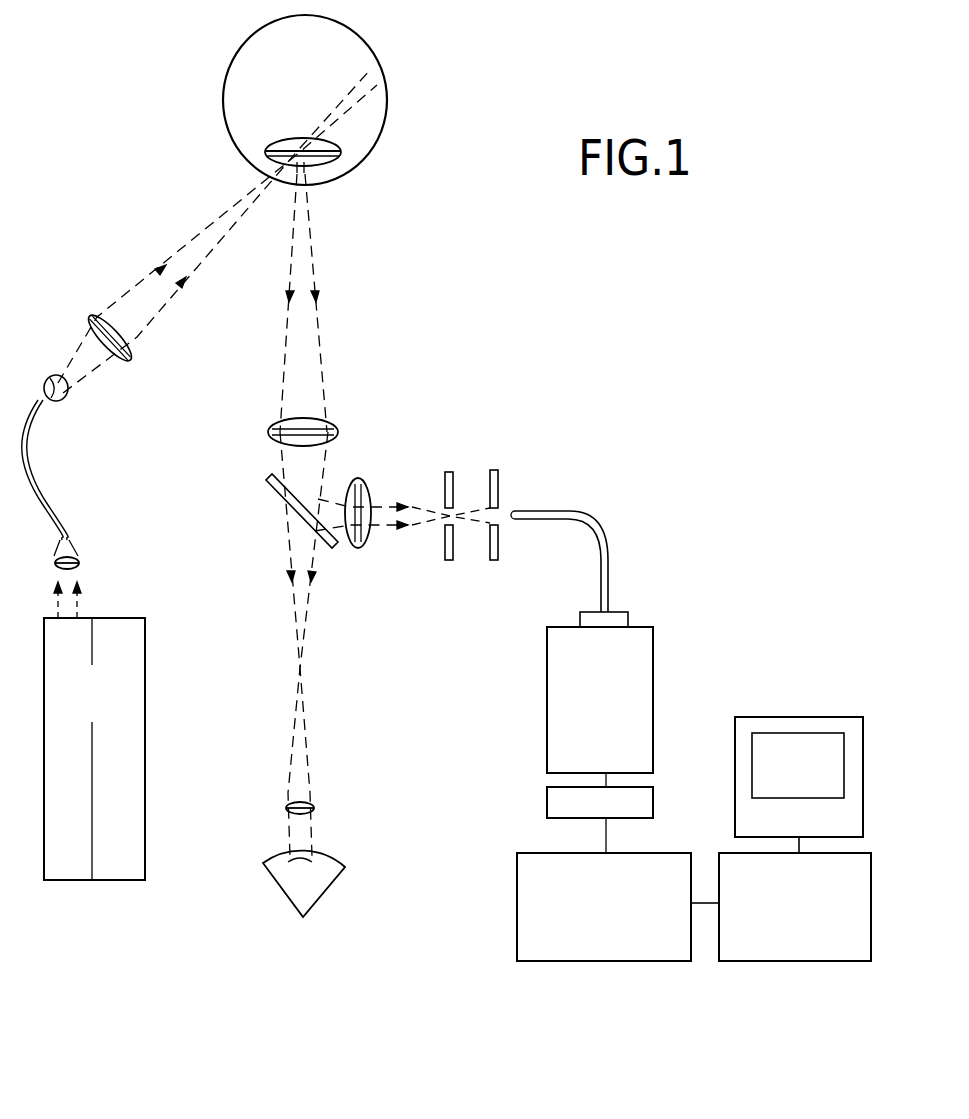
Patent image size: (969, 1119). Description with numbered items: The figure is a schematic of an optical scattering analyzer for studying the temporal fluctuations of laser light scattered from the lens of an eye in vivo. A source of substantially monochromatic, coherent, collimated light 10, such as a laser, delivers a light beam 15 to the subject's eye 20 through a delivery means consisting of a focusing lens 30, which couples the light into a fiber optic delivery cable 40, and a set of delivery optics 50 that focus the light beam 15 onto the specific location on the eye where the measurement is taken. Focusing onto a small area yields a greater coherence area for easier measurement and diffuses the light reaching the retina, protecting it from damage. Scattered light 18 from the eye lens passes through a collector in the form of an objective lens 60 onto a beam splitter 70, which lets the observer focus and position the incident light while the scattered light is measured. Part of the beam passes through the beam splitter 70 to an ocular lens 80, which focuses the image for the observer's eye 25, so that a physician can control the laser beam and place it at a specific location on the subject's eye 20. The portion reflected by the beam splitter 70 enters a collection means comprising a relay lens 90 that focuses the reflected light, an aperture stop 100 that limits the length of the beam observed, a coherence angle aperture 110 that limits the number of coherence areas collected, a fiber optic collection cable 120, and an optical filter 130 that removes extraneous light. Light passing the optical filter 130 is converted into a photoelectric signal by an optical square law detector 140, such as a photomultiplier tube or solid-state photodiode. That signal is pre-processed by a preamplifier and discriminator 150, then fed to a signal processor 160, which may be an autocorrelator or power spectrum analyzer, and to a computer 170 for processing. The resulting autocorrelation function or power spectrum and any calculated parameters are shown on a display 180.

The source of substantially monochromatic, coherent, collimated light 10 is at (182, 739).
The light beam 15 is at (163, 264).
The scattered light 18 is at (330, 295).
The subject's eye 20 is at (214, 66).
The observer's eye 25 is at (328, 886).
The focusing lens 30 is at (80, 562).
The fiber optic delivery cable 40 is at (48, 471).
The delivery optics 50 is at (53, 375).
The objective lens 60 is at (336, 429).
The beam splitter 70 is at (268, 478).
The ocular lens 80 is at (314, 806).
The relay lens 90 is at (359, 548).
The aperture stop 100 is at (450, 470).
The coherence angle aperture 110 is at (494, 467).
The fiber optic collection cable 120 is at (602, 526).
The optical filter 130 is at (628, 612).
The optical square law detector 140 is at (653, 627).
The preamplifier and discriminator 150 is at (547, 803).
The signal processor 160 is at (550, 962).
The computer 170 is at (747, 962).
The display 180 is at (733, 777).